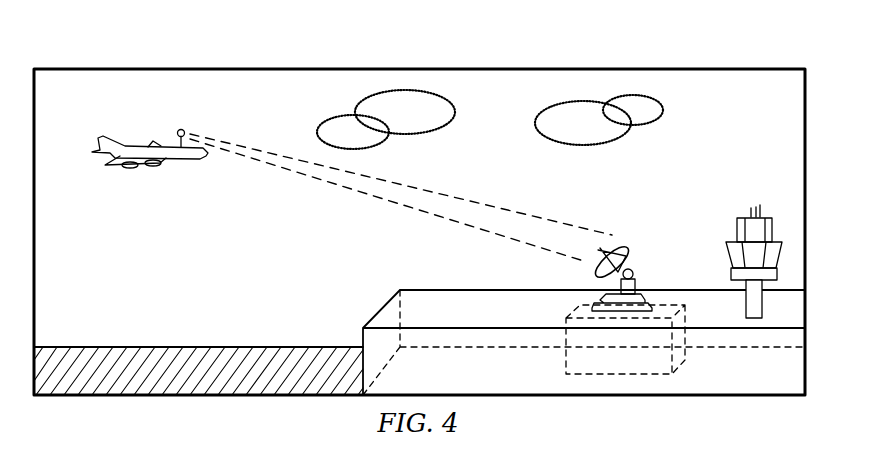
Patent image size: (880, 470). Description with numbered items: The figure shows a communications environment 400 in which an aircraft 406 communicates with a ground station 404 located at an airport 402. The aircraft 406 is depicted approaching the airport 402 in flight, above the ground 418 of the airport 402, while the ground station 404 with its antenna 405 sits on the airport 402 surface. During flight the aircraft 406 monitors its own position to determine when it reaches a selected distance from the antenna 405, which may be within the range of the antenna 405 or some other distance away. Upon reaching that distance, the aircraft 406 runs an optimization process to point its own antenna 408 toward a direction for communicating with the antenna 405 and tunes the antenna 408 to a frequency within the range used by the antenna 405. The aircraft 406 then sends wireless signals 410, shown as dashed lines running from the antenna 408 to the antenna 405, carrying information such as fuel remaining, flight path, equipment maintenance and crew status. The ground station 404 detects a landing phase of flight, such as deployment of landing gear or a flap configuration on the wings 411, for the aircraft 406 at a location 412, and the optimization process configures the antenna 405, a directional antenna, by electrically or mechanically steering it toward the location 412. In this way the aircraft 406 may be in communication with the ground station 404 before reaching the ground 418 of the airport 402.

The communications environment 400 is at (518, 66).
The airport 402 is at (670, 290).
The ground station 404 is at (636, 362).
The antenna 405 is at (628, 235).
The aircraft 406 is at (140, 148).
The antenna 408 is at (182, 129).
The wireless signals 410 is at (469, 197).
The wings 411 is at (119, 168).
The location 412 is at (175, 182).
The ground 418 is at (148, 346).